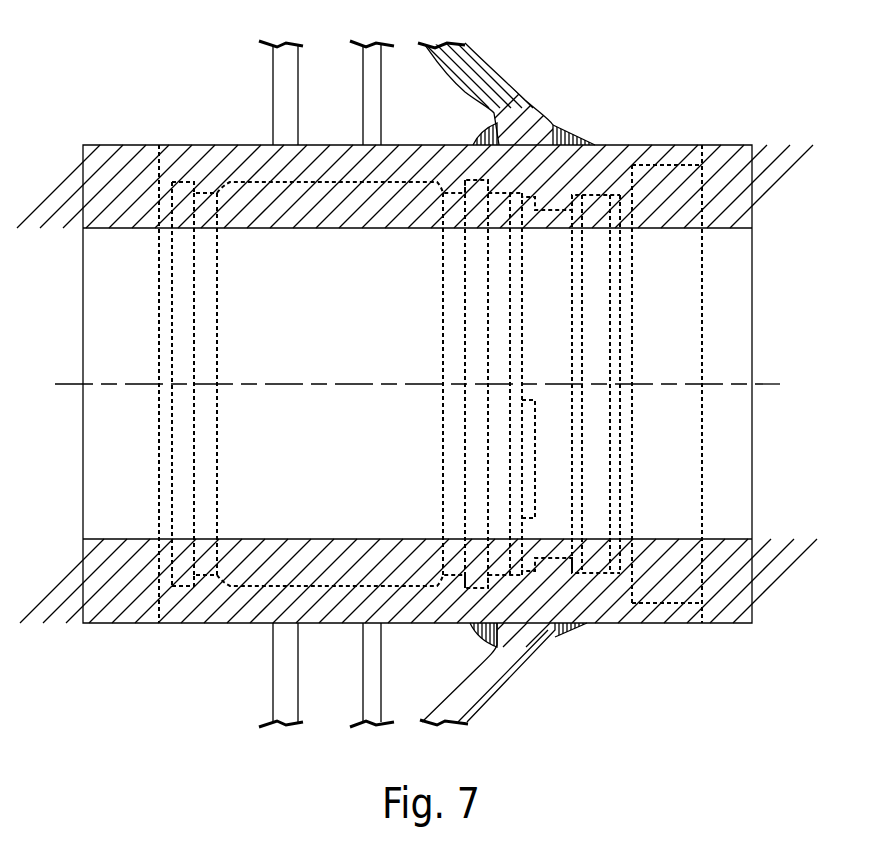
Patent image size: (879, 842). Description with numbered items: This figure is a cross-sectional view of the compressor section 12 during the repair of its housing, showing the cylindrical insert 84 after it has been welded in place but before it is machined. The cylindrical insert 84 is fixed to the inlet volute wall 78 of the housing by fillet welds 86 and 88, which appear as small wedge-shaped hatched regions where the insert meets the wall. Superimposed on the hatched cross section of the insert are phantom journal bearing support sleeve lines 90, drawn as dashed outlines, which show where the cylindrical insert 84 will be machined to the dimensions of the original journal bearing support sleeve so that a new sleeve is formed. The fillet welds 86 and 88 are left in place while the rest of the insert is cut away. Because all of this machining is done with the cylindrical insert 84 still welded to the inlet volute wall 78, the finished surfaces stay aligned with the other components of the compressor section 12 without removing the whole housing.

The compressor section 12 is at (112, 86).
The inlet volute wall 78 is at (530, 117).
The cylindrical insert 84 is at (170, 147).
The fillet weld 86 is at (482, 140).
The fillet weld 88 is at (577, 134).
The phantom journal bearing support sleeve lines 90 is at (249, 179).